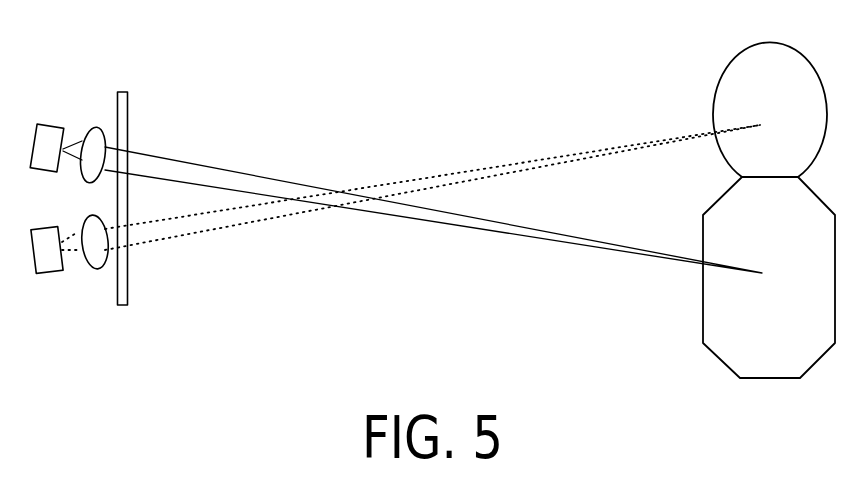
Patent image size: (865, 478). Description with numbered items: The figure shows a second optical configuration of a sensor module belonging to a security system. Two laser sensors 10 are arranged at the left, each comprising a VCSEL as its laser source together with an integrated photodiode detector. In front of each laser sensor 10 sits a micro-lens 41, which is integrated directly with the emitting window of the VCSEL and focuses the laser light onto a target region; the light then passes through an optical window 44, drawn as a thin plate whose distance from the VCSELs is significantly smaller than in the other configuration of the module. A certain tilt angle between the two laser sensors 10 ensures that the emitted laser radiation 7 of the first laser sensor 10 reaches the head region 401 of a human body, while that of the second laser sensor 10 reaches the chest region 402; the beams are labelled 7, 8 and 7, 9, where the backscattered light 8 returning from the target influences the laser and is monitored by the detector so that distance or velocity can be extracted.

The laser sensor 10 is at (48, 135).
The micro-lens 41 is at (97, 129).
The optical window 44 is at (123, 92).
The emitted laser radiation 7 is at (412, 202).
The backscattered light 8 is at (492, 166).
The second light beam 9 is at (492, 232).
The head region 401 is at (728, 80).
The chest region 402 is at (723, 307).